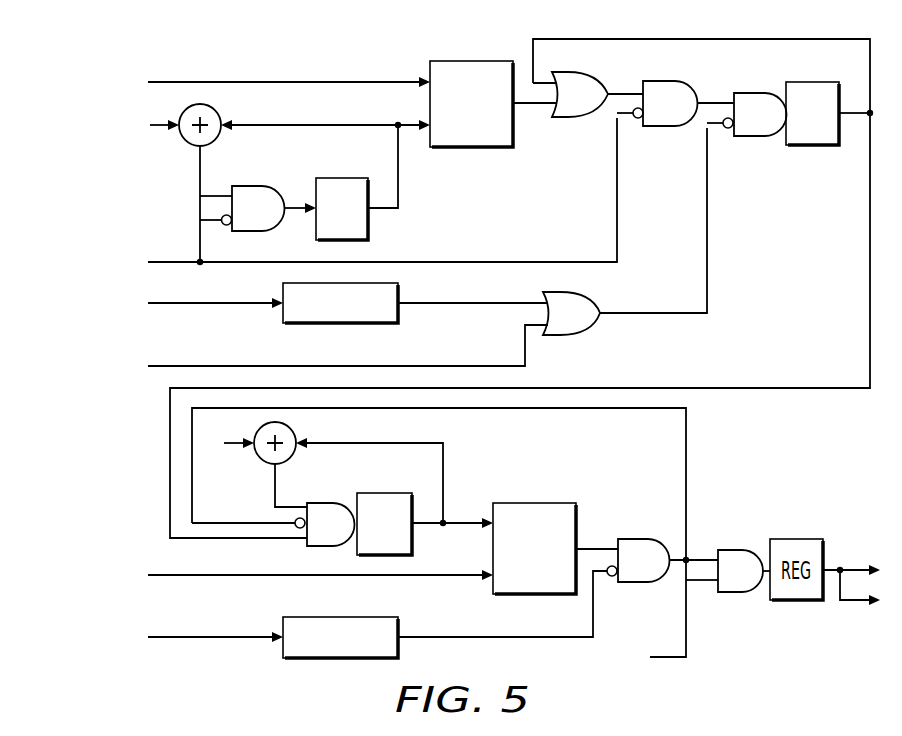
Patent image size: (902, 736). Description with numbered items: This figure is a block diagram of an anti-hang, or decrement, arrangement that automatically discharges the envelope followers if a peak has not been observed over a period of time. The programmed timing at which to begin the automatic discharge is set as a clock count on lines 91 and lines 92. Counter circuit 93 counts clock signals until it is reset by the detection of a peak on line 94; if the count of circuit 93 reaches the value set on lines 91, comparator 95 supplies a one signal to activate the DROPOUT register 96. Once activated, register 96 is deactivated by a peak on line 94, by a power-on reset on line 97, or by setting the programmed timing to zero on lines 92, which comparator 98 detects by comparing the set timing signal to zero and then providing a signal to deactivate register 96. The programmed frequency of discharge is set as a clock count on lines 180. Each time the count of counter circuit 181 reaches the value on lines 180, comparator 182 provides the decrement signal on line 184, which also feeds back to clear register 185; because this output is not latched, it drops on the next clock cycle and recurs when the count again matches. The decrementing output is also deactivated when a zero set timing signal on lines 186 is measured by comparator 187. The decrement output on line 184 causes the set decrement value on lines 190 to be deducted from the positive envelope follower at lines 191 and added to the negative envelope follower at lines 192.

The lines 91 is at (274, 80).
The lines 92 is at (195, 306).
The circuit 93 is at (88, 110).
The line 94 is at (181, 259).
The comparator 95 is at (470, 60).
The DROPOUT register 96 is at (813, 148).
The line 97 is at (452, 364).
The comparator 98 is at (282, 318).
The lines 180 is at (222, 578).
The circuit 181 is at (158, 408).
The comparator 182 is at (537, 500).
The line 184 is at (703, 558).
The register 185 is at (416, 539).
The lines 186 is at (222, 641).
The comparator 187 is at (340, 660).
The lines 190 is at (688, 645).
The lines 191 is at (858, 567).
The lines 192 is at (858, 605).